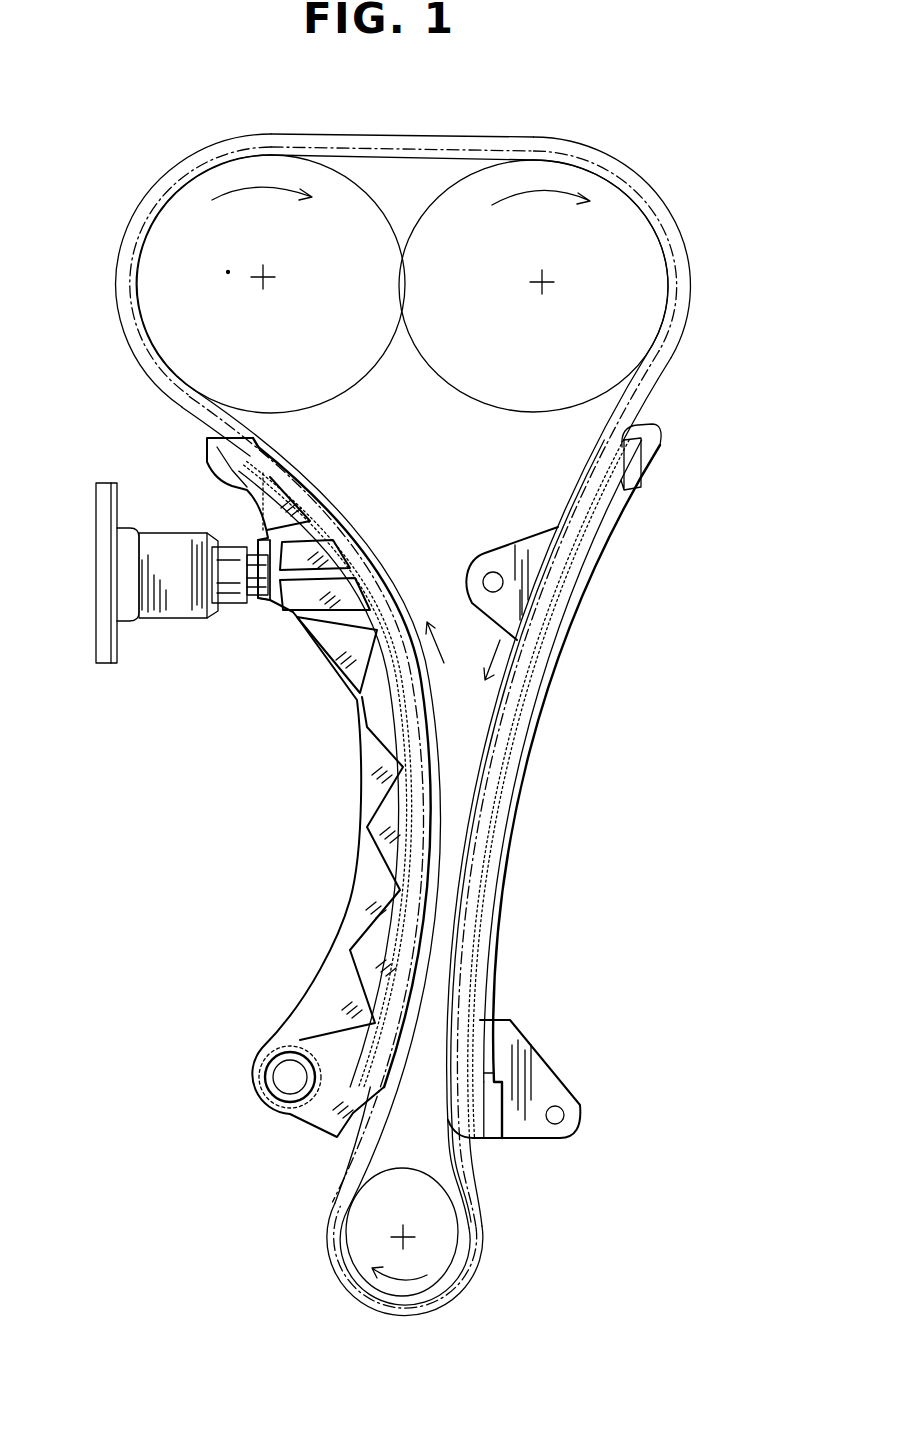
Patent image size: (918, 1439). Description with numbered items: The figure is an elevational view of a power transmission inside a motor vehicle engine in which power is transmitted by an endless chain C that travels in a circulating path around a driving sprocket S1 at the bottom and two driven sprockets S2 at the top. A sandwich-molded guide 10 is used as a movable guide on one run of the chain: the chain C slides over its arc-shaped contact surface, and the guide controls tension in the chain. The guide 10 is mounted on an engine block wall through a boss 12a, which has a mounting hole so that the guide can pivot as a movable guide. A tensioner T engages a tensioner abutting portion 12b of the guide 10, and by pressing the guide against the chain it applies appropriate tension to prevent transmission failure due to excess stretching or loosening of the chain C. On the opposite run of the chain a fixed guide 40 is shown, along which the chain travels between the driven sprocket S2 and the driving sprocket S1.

The endless chain C is at (407, 135).
The driven sprocket S2 is at (180, 268).
The driving sprocket S1 is at (440, 1237).
The sandwich-molded guide 10 is at (345, 804).
The boss 12a is at (286, 1108).
The tensioner abutting portion 12b is at (277, 612).
The tensioner T is at (170, 634).
The chain guide 40 is at (576, 714).